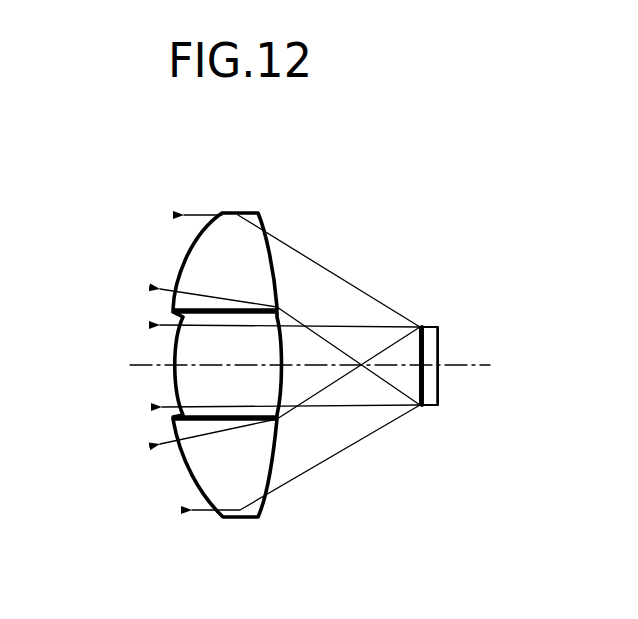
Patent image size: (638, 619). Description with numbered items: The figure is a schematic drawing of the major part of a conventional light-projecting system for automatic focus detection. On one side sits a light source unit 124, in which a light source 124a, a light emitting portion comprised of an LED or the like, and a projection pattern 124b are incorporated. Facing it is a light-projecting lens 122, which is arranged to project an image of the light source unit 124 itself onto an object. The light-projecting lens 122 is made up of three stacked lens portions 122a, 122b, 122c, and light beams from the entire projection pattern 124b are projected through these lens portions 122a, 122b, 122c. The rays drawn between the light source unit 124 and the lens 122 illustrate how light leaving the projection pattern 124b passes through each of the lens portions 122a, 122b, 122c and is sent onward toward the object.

The light-projecting lens 122 is at (184, 397).
The lens portion 122a is at (205, 258).
The lens portion 122b is at (185, 338).
The lens portion 122c is at (212, 465).
The light source unit 124 is at (461, 368).
The light source 124a is at (440, 327).
The projection pattern 124b is at (419, 325).